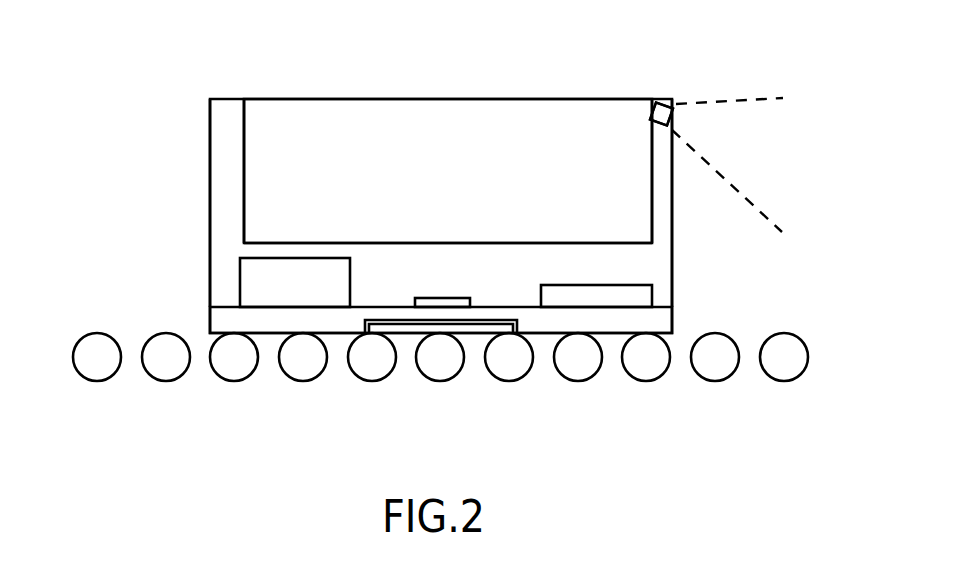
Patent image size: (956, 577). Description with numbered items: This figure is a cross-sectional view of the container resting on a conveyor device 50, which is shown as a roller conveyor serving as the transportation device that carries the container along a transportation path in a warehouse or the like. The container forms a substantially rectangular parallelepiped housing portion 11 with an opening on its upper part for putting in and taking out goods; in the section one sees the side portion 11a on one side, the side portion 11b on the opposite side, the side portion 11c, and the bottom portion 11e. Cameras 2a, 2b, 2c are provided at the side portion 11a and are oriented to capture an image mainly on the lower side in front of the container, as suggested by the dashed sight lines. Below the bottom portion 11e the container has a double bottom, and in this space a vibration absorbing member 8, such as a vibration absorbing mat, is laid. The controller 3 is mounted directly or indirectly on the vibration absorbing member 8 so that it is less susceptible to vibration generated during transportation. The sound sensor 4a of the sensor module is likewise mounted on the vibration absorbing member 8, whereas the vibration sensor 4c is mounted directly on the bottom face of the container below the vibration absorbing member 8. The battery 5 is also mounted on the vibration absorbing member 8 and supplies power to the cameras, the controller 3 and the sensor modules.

The conveyor device 50 is at (64, 400).
The vibration absorbing member 8 is at (654, 323).
The housing portion 11 is at (585, 128).
The side portion 11a is at (662, 188).
The side portion 11b is at (222, 178).
The side portion 11c is at (368, 137).
The bottom portion 11e is at (344, 243).
The controller 3 is at (240, 282).
The sound sensor 4a is at (443, 298).
The vibration sensor 4c is at (407, 328).
The battery 5 is at (654, 295).
The camera 2b is at (664, 100).
The camera 2a is at (661, 114).
The camera 2c is at (661, 114).